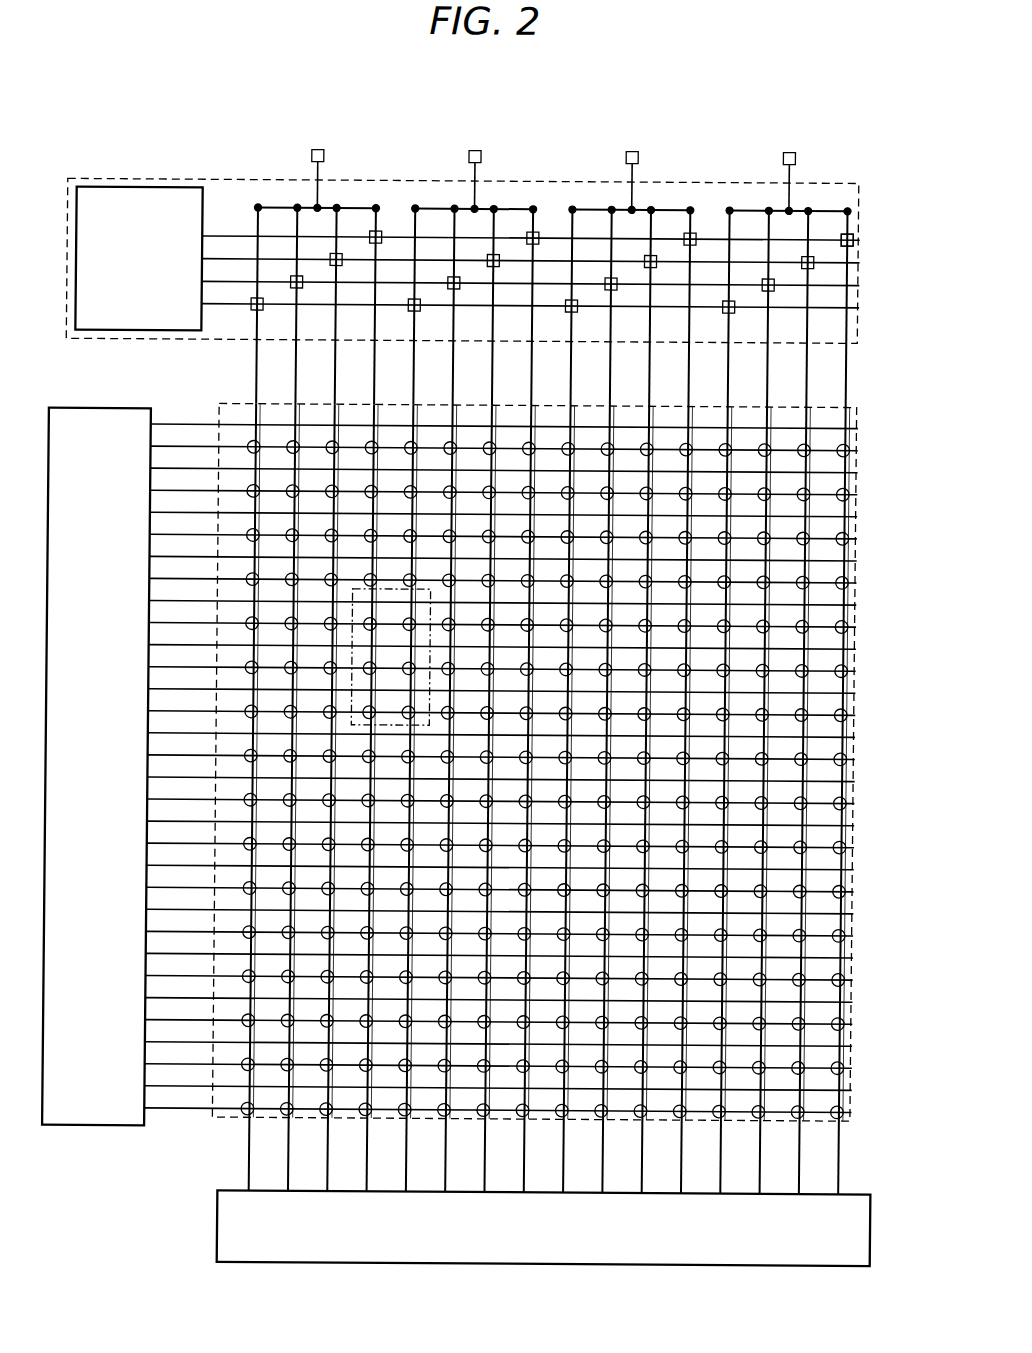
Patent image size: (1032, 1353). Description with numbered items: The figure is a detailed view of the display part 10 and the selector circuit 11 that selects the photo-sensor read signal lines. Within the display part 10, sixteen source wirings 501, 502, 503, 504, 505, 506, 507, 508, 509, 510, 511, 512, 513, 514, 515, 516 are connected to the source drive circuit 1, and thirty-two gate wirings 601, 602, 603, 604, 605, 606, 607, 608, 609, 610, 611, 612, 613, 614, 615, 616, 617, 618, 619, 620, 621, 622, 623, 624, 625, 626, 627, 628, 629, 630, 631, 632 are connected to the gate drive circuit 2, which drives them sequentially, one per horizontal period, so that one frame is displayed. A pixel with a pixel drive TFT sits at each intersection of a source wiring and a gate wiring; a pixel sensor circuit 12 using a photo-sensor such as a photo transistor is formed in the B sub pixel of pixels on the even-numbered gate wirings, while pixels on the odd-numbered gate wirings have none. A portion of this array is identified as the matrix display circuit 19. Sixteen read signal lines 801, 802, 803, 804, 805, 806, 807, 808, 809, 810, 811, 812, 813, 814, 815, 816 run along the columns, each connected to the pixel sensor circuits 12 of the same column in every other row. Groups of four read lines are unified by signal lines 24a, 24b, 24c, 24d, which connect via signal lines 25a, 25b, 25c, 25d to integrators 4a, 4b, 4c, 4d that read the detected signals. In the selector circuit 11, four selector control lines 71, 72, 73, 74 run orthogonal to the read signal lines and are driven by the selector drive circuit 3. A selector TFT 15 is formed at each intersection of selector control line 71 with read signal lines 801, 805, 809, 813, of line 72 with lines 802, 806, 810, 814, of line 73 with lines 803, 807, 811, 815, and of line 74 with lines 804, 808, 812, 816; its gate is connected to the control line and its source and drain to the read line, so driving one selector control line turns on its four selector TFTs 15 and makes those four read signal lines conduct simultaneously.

The source drive circuit 1 is at (227, 1228).
The gate drive circuit 2 is at (102, 1126).
The selector drive circuit 3 is at (138, 188).
The integrator 4a is at (317, 149).
The integrator 4b is at (488, 133).
The integrator 4c is at (645, 134).
The integrator 4d is at (802, 135).
The display part 10 is at (858, 405).
The selector circuit 11 is at (858, 188).
The pixel sensor circuit 12 is at (850, 445).
The selector TFT 15 is at (858, 236).
The matrix display circuit 19 is at (434, 652).
The signal line 24a is at (355, 208).
The signal line 24b is at (475, 179).
The signal line 24c is at (632, 180).
The signal line 24d is at (789, 181).
The signal line 25a is at (315, 206).
The signal line 25b is at (448, 165).
The signal line 25c is at (606, 166).
The signal line 25d is at (763, 167).
The selector control line 71 is at (243, 304).
The selector control line 72 is at (243, 282).
The selector control line 73 is at (243, 259).
The selector control line 74 is at (243, 236).
The source wiring 501 is at (238, 796).
The source wiring 502 is at (277, 797).
The source wiring 503 is at (317, 797).
The source wiring 504 is at (356, 797).
The source wiring 505 is at (395, 798).
The source wiring 506 is at (435, 798).
The source wiring 507 is at (474, 798).
The source wiring 508 is at (513, 798).
The source wiring 509 is at (553, 799).
The source wiring 510 is at (592, 799).
The source wiring 511 is at (631, 799).
The source wiring 512 is at (670, 799).
The source wiring 513 is at (710, 800).
The source wiring 514 is at (749, 800).
The source wiring 515 is at (788, 800).
The source wiring 516 is at (828, 800).
The gate wiring 601 is at (504, 419).
The gate wiring 602 is at (503, 441).
The gate wiring 603 is at (503, 463).
The gate wiring 604 is at (503, 485).
The gate wiring 605 is at (503, 507).
The gate wiring 606 is at (503, 529).
The gate wiring 607 is at (502, 551).
The gate wiring 608 is at (502, 573).
The gate wiring 609 is at (502, 596).
The gate wiring 610 is at (502, 618).
The gate wiring 611 is at (502, 640).
The gate wiring 612 is at (501, 662).
The gate wiring 613 is at (501, 684).
The gate wiring 614 is at (501, 706).
The gate wiring 615 is at (501, 728).
The gate wiring 616 is at (501, 750).
The gate wiring 617 is at (500, 772).
The gate wiring 618 is at (500, 794).
The gate wiring 619 is at (500, 816).
The gate wiring 620 is at (500, 838).
The gate wiring 621 is at (500, 860).
The gate wiring 622 is at (499, 882).
The gate wiring 623 is at (499, 904).
The gate wiring 624 is at (499, 926).
The gate wiring 625 is at (499, 948).
The gate wiring 626 is at (498, 971).
The gate wiring 627 is at (498, 993).
The gate wiring 628 is at (498, 1015).
The gate wiring 629 is at (498, 1037).
The gate wiring 630 is at (498, 1059).
The gate wiring 631 is at (497, 1081).
The gate wiring 632 is at (497, 1103).
The read signal line 801 is at (241, 305).
The read signal line 802 is at (280, 306).
The read signal line 803 is at (319, 306).
The read signal line 804 is at (359, 306).
The read signal line 805 is at (398, 306).
The read signal line 806 is at (437, 307).
The read signal line 807 is at (476, 307).
The read signal line 808 is at (516, 307).
The read signal line 809 is at (555, 307).
The read signal line 810 is at (594, 308).
The read signal line 811 is at (634, 308).
The read signal line 812 is at (673, 308).
The read signal line 813 is at (712, 308).
The read signal line 814 is at (752, 309).
The read signal line 815 is at (791, 309).
The read signal line 816 is at (830, 309).